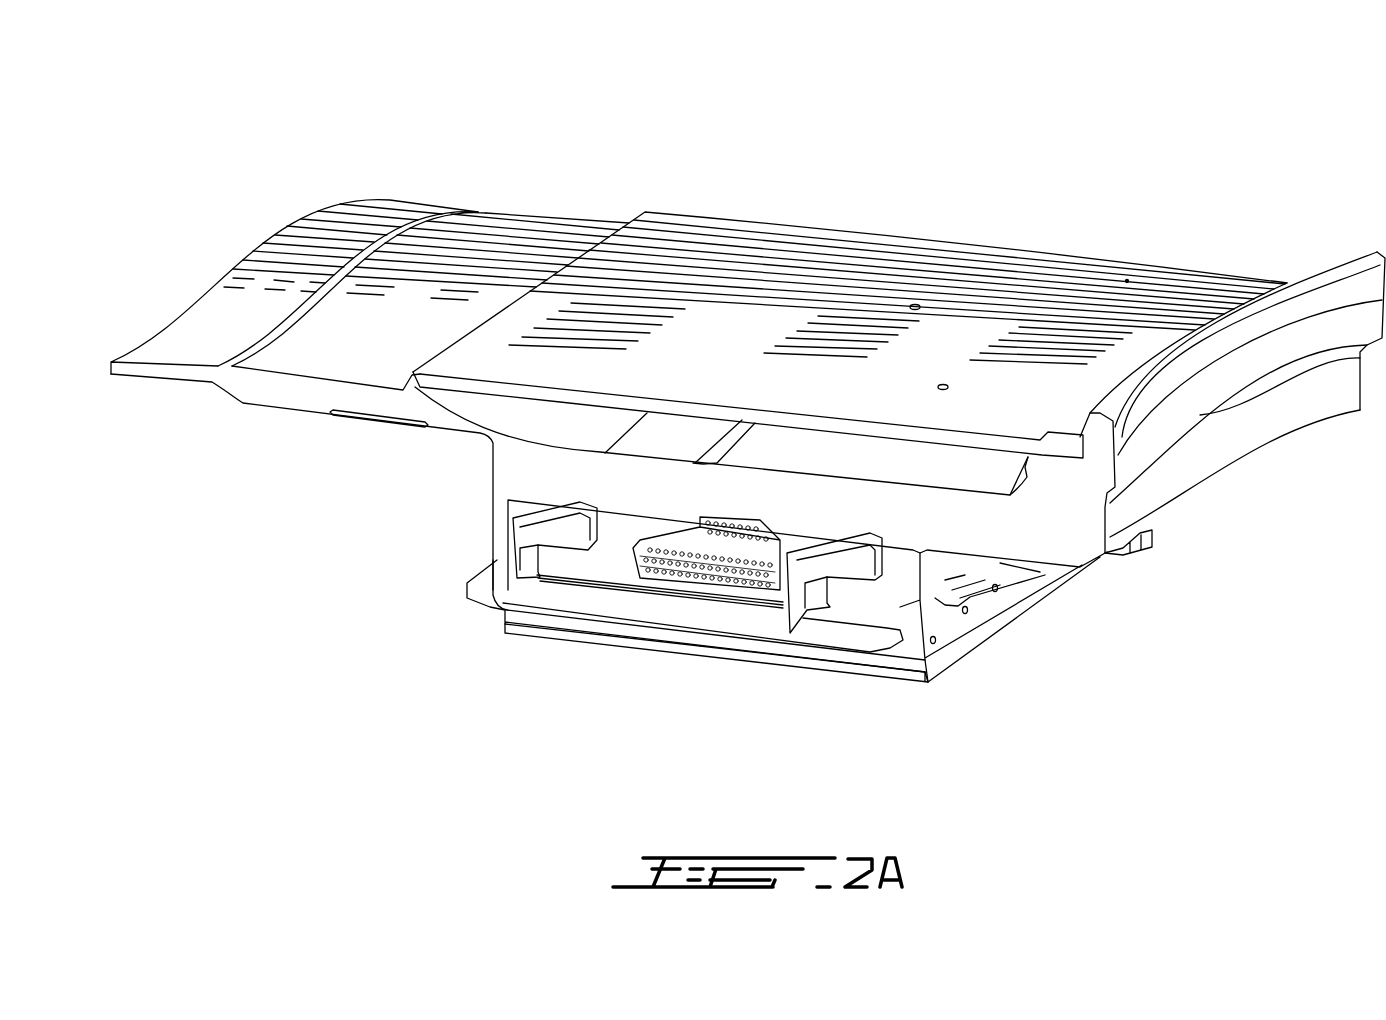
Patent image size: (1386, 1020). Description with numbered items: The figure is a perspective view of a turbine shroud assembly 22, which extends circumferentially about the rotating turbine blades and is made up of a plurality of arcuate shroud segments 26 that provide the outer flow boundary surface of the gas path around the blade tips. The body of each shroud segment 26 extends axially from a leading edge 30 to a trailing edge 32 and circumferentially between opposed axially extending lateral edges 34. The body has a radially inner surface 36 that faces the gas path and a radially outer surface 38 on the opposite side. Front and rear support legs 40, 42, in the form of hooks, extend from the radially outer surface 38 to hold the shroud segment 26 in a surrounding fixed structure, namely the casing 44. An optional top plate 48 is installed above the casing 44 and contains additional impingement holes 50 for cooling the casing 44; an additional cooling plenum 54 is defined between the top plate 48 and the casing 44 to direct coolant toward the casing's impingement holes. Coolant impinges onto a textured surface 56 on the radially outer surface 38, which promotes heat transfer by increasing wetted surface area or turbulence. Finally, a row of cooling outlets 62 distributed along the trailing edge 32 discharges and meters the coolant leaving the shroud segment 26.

The turbine shroud assembly 22 is at (212, 132).
The shroud segment 26 is at (463, 550).
The leading edge 30 is at (503, 622).
The trailing edge 32 is at (943, 665).
The lateral edges 34 is at (580, 633).
The radially inner surface 36 is at (820, 673).
The radially outer surface 38 is at (988, 566).
The front support leg 40 is at (540, 530).
The rear support leg 42 is at (837, 567).
The casing 44 is at (1080, 543).
The top plate 48 is at (843, 247).
The impingement holes 50 is at (1127, 281).
The additional cooling plenum 54 is at (805, 448).
The textured surface 56 is at (703, 590).
The cooling outlets 62 is at (993, 590).